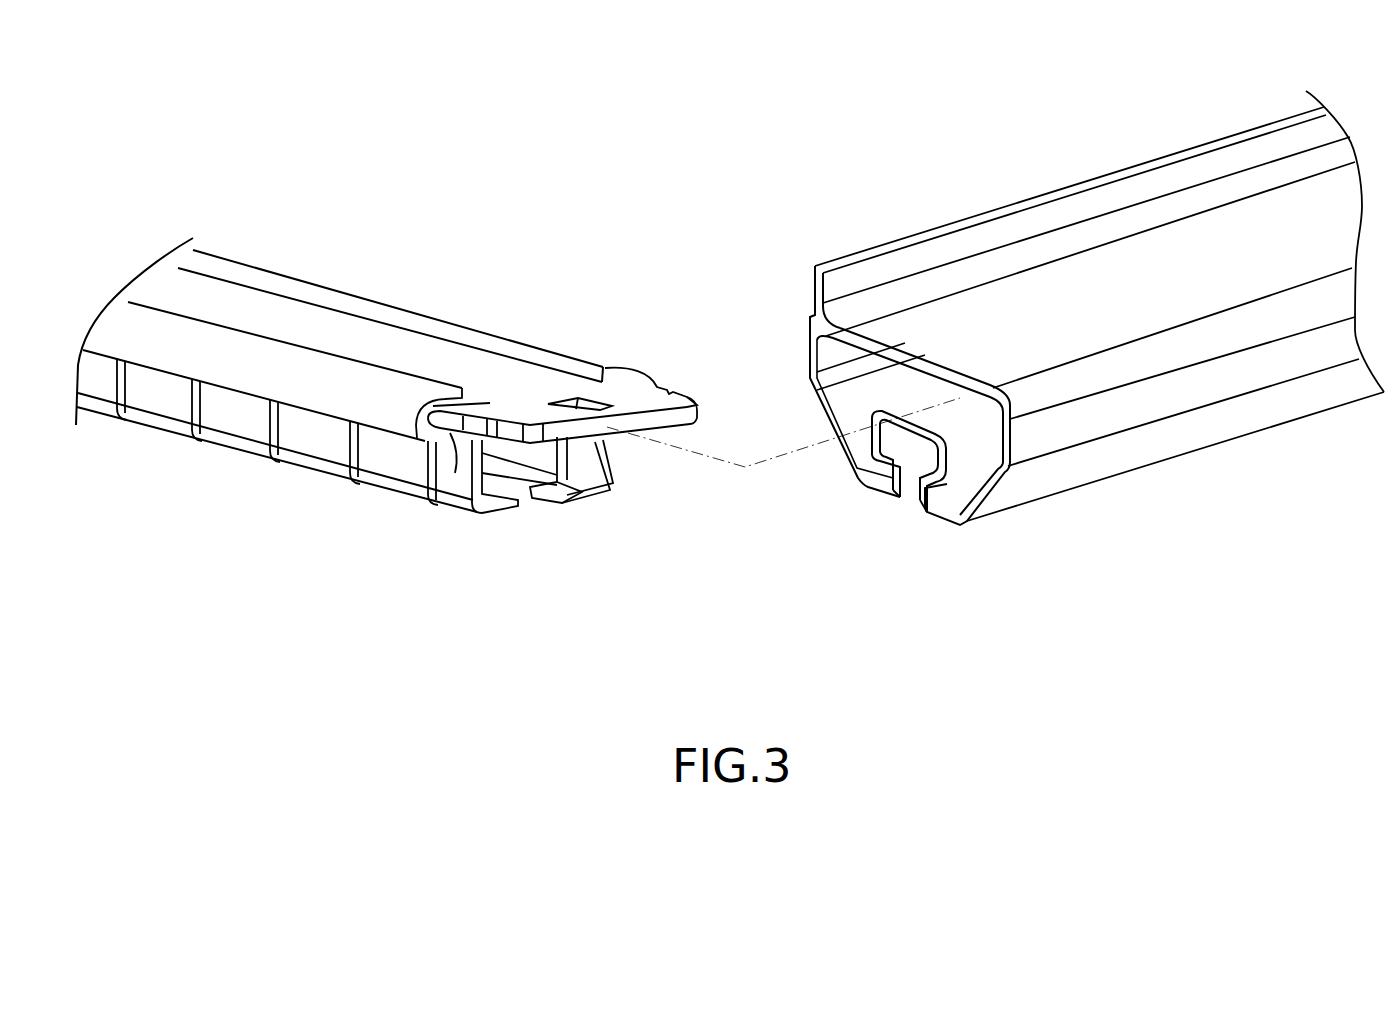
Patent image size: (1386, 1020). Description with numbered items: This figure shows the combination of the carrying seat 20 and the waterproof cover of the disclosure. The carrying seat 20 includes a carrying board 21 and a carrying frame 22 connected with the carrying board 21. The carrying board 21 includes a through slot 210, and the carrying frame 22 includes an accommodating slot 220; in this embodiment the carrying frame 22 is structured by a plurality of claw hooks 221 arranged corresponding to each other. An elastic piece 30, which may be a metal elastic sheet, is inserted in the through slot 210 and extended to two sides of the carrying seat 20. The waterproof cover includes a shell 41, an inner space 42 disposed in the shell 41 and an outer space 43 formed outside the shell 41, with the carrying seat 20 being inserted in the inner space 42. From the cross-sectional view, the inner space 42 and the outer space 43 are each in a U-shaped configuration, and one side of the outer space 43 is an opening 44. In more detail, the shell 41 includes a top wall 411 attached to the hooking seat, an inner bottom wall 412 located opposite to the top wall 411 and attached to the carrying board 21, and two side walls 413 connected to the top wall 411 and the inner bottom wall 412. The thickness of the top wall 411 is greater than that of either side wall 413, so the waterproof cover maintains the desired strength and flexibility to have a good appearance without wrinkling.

The carrying seat 20 is at (228, 447).
The carrying board 21 is at (573, 521).
The through slot 210 is at (430, 425).
The carrying frame 22 is at (322, 440).
The accommodating slot 220 is at (586, 463).
The claw hooks 221 is at (500, 512).
The elastic piece 30 is at (631, 410).
The shell 41 is at (1143, 405).
The top wall 411 is at (898, 353).
The inner bottom wall 412 is at (928, 437).
The side walls 413 is at (992, 490).
The inner space 42 is at (878, 388).
The outer space 43 is at (900, 437).
The opening 44 is at (915, 502).